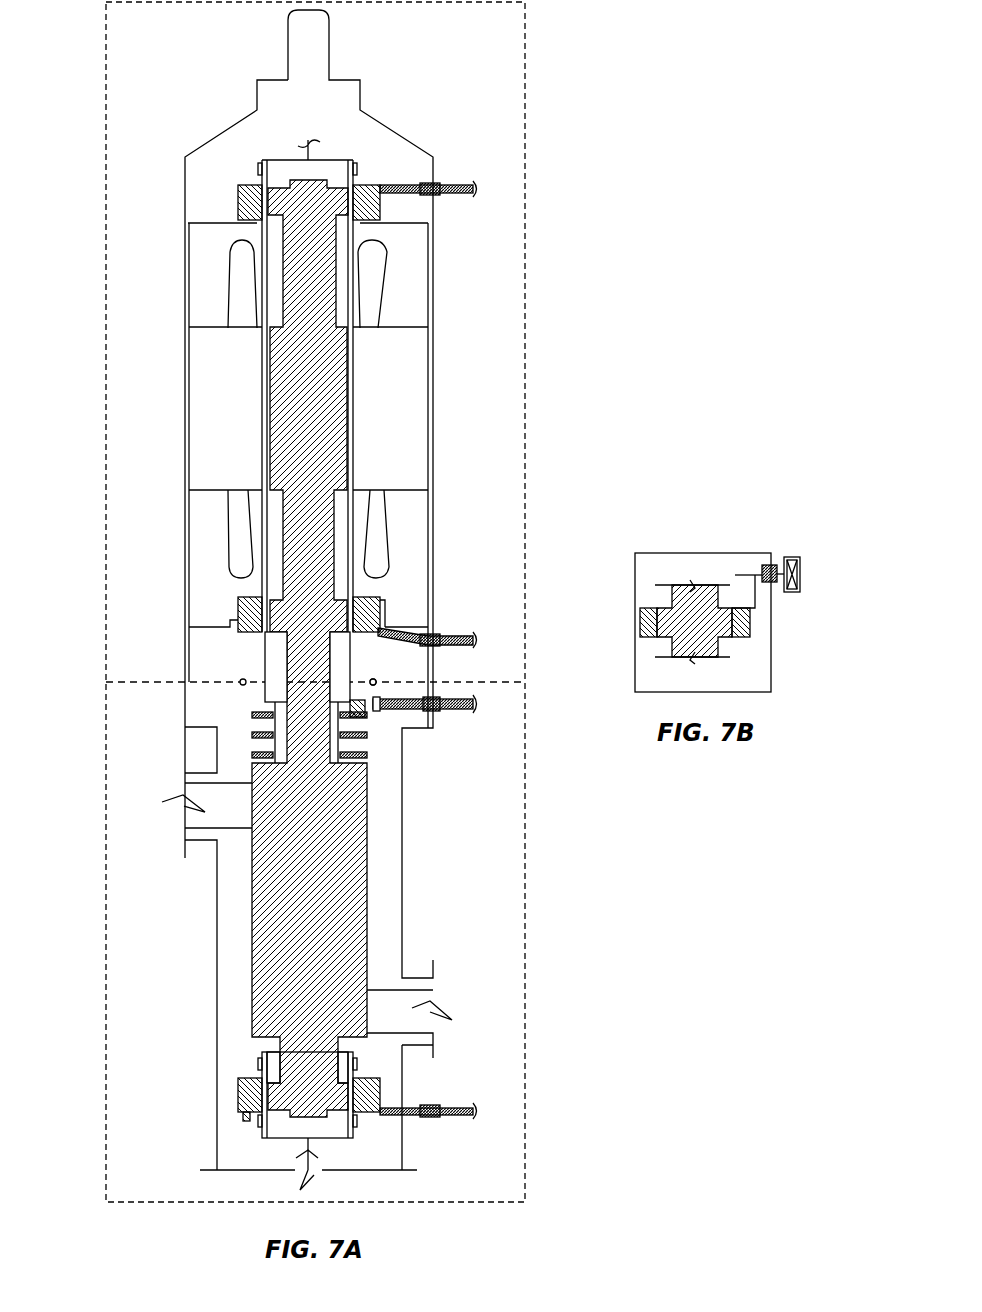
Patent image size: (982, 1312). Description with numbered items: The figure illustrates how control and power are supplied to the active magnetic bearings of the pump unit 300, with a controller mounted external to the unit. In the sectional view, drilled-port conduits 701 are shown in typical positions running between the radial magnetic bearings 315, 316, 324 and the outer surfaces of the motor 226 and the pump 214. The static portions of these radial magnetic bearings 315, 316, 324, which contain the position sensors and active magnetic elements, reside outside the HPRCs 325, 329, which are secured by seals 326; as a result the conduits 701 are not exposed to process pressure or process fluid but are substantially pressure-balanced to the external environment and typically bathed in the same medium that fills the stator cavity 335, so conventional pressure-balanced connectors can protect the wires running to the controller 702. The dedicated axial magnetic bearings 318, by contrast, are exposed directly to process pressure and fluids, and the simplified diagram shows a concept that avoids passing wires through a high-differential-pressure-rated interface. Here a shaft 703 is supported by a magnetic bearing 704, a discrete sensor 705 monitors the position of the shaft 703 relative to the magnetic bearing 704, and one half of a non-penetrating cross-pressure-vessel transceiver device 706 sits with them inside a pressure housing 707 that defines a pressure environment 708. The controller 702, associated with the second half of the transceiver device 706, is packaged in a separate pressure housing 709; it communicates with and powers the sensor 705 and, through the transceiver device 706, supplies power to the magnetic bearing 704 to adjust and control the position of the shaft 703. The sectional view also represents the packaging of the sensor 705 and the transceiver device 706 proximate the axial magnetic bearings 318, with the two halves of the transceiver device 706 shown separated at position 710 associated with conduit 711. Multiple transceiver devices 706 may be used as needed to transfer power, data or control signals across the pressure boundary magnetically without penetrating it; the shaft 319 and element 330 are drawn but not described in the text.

In FIG. 7A, the pump unit 300 is at (216, 62).
In FIG. 7A, the motor 226 is at (106, 642).
In FIG. 7A, the pump 214 is at (106, 700).
In FIG. 7A, the radial magnetic bearing 315 is at (375, 1096).
In FIG. 7A, the radial magnetic bearing 316 is at (375, 604).
In FIG. 7A, the axial magnetic bearing 318 is at (260, 752).
In FIG. 7A, the shaft 319 is at (330, 527).
In FIG. 7A, the radial magnetic bearing 324 is at (368, 195).
In FIG. 7A, the HPRC 325 is at (265, 270).
In FIG. 7A, the seal 326 is at (262, 178).
In FIG. 7A, the HPRC 329 is at (265, 1096).
In FIG. 7A, the leaf spring 330 is at (345, 272).
In FIG. 7A, the stator cavity 335 is at (415, 302).
In FIG. 7A, the drilled-port conduit 701 is at (420, 183).
In FIG. 7B, the controller 702 is at (800, 566).
In FIG. 7B, the shaft 703 is at (670, 640).
In FIG. 7B, the magnetic bearing 704 is at (645, 625).
In FIG. 7A, the discrete sensor 705 is at (356, 718).
In FIG. 7B, the discrete sensor 705 is at (730, 606).
In FIG. 7A, the non-penetrating cross-pressure-vessel transceiver device 706 is at (375, 700).
In FIG. 7B, the non-penetrating cross-pressure-vessel transceiver device 706 is at (768, 568).
In FIG. 7B, the pressure housing 707 is at (771, 648).
In FIG. 7B, the pressure environment 708 is at (648, 583).
In FIG. 7B, the separate pressure housing 709 is at (800, 584).
In FIG. 7A, the position 710 is at (373, 682).
In FIG. 7A, the conduit 711 is at (408, 712).